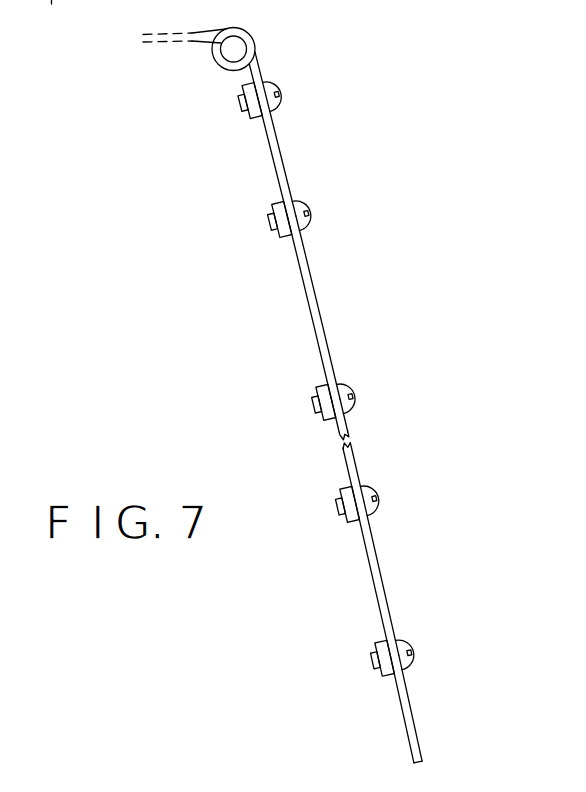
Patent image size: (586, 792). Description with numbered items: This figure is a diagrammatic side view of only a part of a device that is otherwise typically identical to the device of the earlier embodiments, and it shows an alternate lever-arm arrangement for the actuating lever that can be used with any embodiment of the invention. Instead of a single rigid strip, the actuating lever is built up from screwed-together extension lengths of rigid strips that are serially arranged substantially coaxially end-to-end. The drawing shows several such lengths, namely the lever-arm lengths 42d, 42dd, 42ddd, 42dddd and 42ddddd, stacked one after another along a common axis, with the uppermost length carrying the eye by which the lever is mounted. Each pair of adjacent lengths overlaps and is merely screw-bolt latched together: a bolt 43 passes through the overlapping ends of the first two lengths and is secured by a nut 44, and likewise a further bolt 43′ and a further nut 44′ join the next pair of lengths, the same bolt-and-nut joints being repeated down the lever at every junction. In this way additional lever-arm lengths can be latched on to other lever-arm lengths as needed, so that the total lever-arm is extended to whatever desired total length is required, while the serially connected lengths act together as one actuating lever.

The lever-arm length 42d is at (286, 152).
The lever-arm length 42dd is at (316, 315).
The lever-arm length 42ddd is at (358, 465).
The lever-arm length 42dddd is at (380, 571).
The lever-arm length 42ddddd is at (412, 714).
The bolt 43 is at (307, 214).
The bolt 43′ is at (414, 369).
The nut 44 is at (247, 88).
The nut 44′ is at (273, 207).